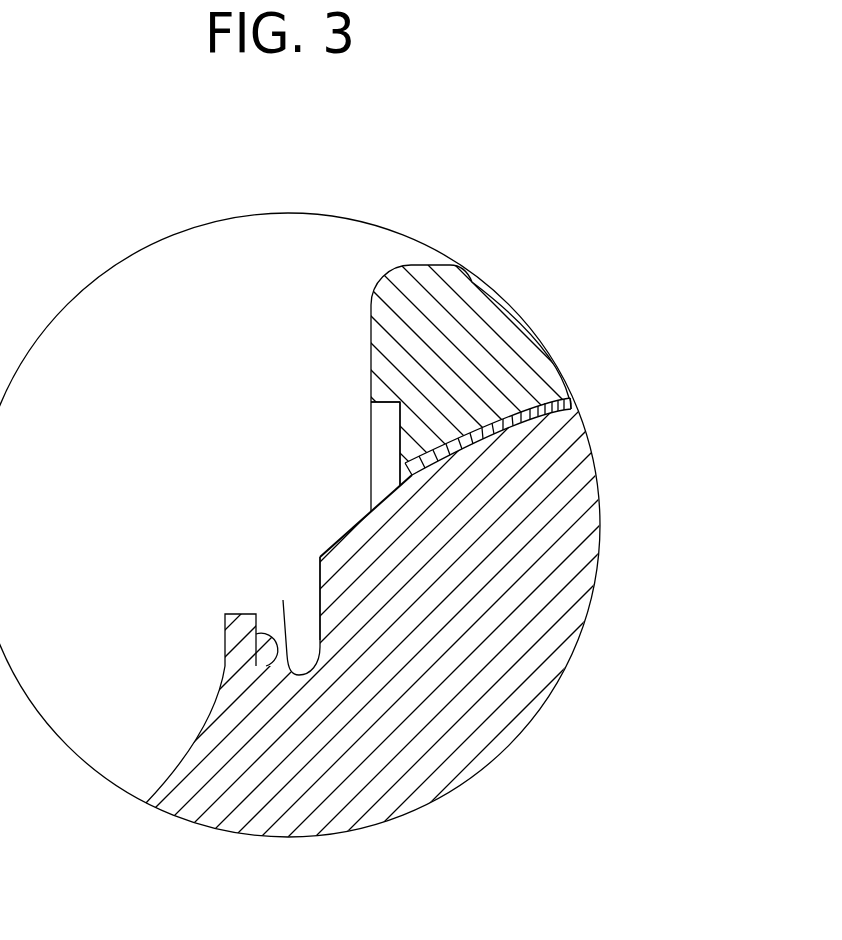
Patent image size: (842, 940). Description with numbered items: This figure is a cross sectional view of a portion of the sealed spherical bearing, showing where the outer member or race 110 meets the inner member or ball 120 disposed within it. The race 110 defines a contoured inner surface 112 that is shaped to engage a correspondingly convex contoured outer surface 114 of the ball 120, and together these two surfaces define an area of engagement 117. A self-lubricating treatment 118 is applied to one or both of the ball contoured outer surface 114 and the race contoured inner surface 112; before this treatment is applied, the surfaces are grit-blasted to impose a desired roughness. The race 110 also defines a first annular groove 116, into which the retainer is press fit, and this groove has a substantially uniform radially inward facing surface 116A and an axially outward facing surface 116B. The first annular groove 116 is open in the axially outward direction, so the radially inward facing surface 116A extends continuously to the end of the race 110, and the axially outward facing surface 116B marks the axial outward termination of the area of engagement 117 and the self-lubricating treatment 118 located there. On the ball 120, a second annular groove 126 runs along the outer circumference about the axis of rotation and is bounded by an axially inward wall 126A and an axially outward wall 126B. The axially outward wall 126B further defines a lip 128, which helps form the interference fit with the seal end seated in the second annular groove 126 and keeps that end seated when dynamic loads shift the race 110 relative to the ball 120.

The race 110 is at (462, 310).
The inner surface 112 is at (512, 428).
The contoured outer surface 114 is at (512, 428).
The first annular groove 116 is at (386, 437).
The radially inward facing surface 116A is at (371, 402).
The axially outward facing surface 116B is at (402, 458).
The area of engagement 117 is at (570, 404).
The self-lubricating treatment 118 is at (573, 406).
The ball 120 is at (573, 582).
The second annular groove 126 is at (283, 600).
The axially inward wall 126A is at (320, 597).
The axially outward wall 126B is at (262, 666).
The lip 128 is at (232, 614).